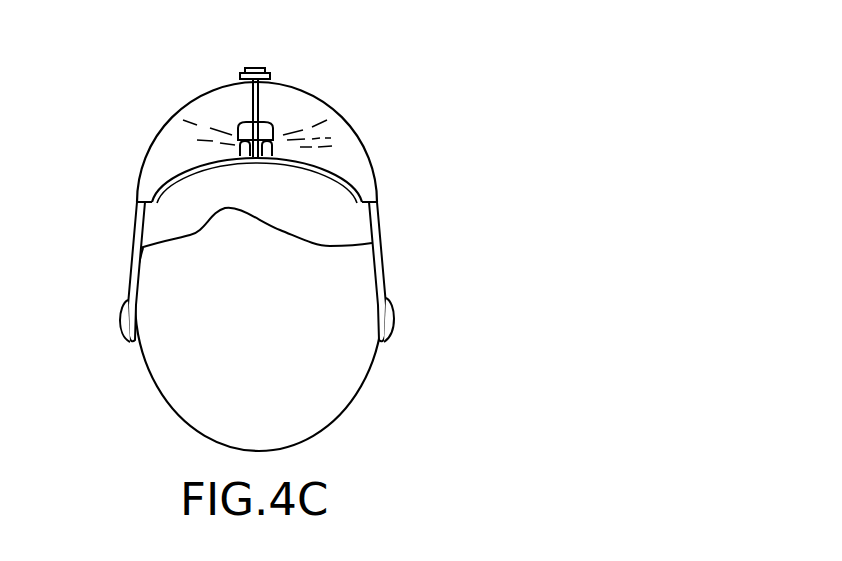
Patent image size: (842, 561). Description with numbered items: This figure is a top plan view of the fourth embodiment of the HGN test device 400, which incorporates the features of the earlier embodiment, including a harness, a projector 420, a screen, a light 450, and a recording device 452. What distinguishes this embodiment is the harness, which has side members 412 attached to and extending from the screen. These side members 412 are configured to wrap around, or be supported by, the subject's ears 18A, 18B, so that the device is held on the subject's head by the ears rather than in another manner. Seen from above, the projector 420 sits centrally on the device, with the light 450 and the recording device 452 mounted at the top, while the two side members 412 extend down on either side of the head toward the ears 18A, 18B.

The HGN test device 400 is at (310, 238).
The side members 412 is at (137, 253).
The ear 18A is at (120, 318).
The ear 18B is at (395, 312).
The projector 420 is at (245, 148).
The light 450 is at (270, 76).
The recording device 452 is at (260, 67).